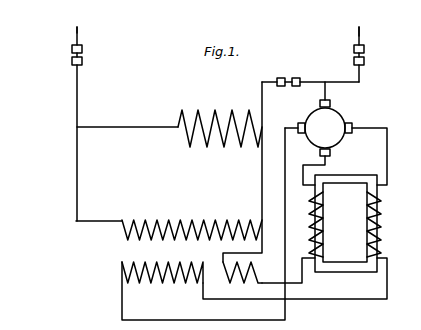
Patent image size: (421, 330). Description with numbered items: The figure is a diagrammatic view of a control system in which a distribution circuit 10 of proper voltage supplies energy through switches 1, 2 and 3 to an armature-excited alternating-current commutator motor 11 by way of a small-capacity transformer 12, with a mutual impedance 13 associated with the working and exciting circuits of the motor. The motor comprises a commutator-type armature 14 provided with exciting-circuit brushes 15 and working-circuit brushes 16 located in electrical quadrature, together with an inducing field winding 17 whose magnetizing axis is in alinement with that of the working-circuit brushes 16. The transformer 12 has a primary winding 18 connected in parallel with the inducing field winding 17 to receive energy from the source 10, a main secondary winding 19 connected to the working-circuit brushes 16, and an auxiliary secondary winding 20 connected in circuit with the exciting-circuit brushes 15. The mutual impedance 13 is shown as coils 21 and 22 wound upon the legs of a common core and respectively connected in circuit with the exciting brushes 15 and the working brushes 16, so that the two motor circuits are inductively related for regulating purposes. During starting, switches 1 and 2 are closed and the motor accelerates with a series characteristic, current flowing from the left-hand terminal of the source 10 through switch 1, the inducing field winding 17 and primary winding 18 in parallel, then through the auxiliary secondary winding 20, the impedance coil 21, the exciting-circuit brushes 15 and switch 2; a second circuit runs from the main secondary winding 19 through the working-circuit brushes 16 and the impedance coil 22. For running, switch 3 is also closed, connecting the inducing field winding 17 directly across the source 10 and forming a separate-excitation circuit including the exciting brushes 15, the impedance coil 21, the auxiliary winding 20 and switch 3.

The switch 1 is at (72, 57).
The switch 2 is at (364, 60).
The switch 3 is at (290, 90).
The distribution circuit 10 is at (357, 36).
The alternating-current commutator motor 11 is at (383, 112).
The transformer 12 is at (105, 265).
The mutual impedance 13 is at (356, 227).
The armature 14 is at (325, 128).
The exciting-circuit brushes 15 is at (331, 153).
The working-circuit brushes 16 is at (352, 125).
The inducing field winding 17 is at (214, 108).
The primary winding 18 is at (147, 222).
The main secondary winding 19 is at (149, 259).
The auxiliary secondary winding 20 is at (225, 270).
The impedance coil 21 is at (314, 228).
The impedance coil 22 is at (379, 229).